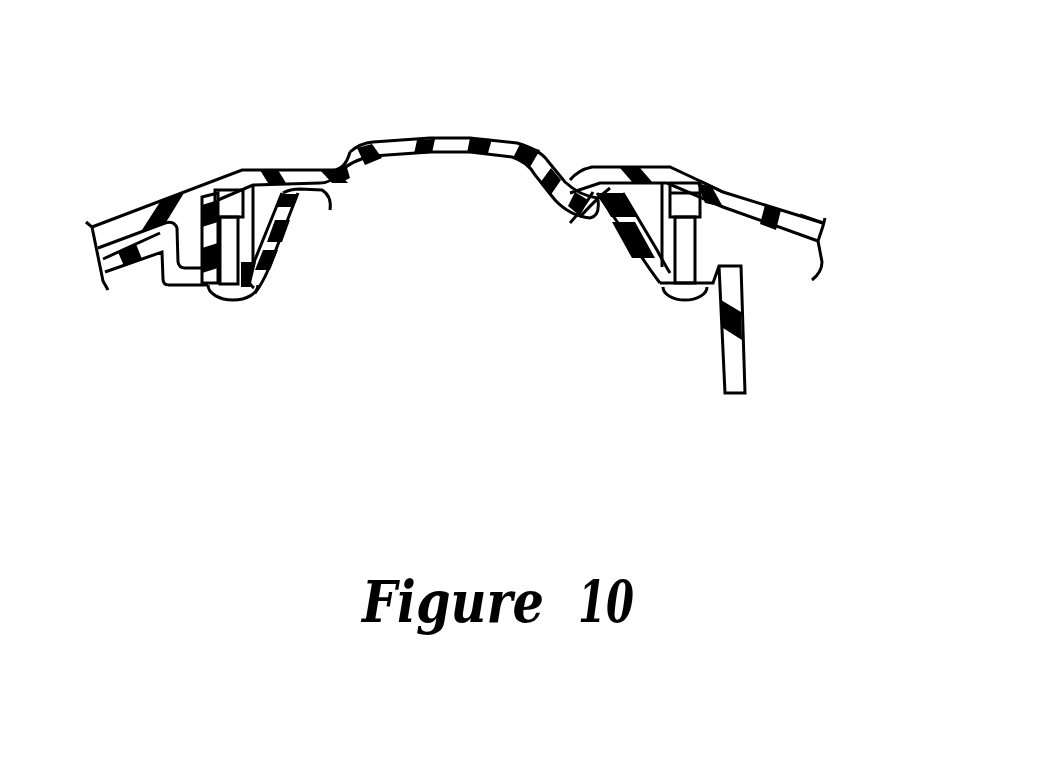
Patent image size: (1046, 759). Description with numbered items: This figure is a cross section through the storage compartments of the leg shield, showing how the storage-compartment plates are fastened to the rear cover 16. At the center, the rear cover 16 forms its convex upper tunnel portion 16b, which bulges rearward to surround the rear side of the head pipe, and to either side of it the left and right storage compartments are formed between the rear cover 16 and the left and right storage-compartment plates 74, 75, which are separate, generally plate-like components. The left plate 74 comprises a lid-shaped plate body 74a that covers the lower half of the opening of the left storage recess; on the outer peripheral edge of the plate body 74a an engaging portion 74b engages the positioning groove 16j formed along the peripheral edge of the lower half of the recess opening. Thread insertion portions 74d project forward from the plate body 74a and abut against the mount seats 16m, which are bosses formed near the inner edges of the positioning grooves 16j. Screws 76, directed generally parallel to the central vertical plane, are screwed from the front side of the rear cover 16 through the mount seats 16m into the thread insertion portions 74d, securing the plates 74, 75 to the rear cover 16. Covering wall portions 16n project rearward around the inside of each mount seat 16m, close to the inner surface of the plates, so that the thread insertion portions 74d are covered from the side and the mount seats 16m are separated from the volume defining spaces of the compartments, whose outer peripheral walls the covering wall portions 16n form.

The rear cover 16 is at (421, 128).
The upper tunnel portion 16b is at (462, 132).
The positioning groove 16j is at (288, 193).
The mount seat 16m is at (186, 264).
The covering wall portion 16n is at (283, 198).
The left storage-compartment plate 74 is at (794, 194).
The plate body 74a is at (805, 218).
The engaging portion 74b is at (590, 226).
The thread insertion portion 74d is at (727, 207).
The right storage-compartment plate 75 is at (125, 196).
The screw 76 is at (240, 300).